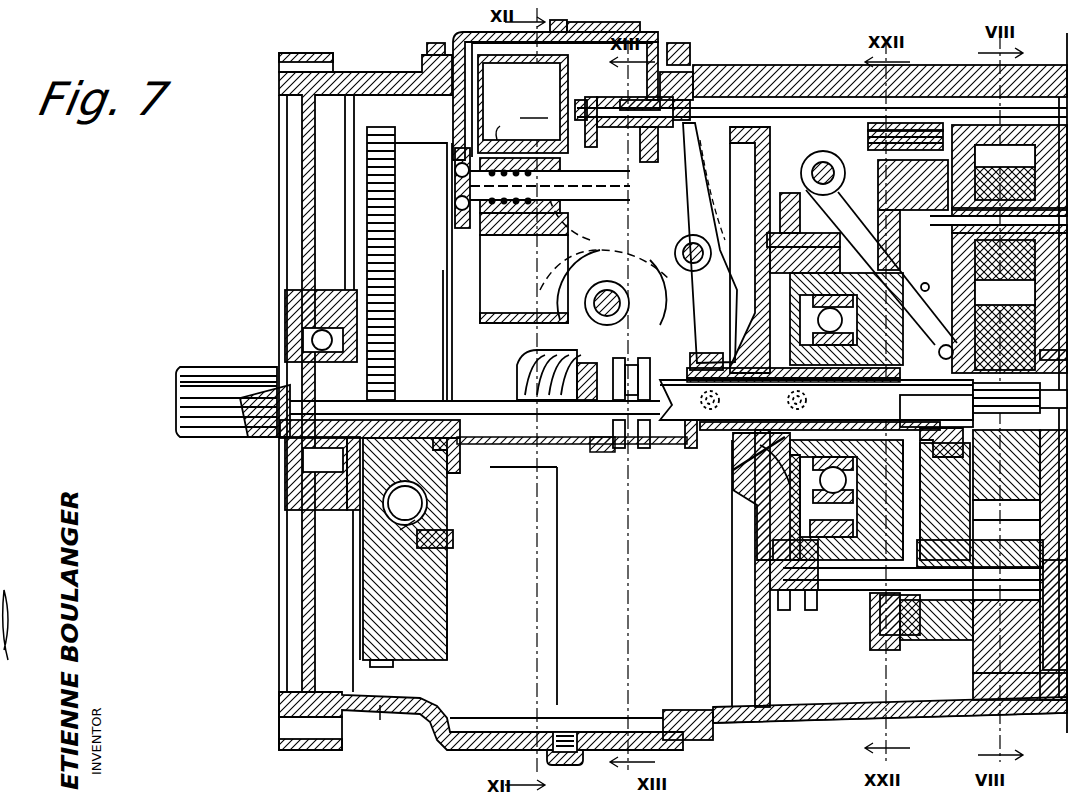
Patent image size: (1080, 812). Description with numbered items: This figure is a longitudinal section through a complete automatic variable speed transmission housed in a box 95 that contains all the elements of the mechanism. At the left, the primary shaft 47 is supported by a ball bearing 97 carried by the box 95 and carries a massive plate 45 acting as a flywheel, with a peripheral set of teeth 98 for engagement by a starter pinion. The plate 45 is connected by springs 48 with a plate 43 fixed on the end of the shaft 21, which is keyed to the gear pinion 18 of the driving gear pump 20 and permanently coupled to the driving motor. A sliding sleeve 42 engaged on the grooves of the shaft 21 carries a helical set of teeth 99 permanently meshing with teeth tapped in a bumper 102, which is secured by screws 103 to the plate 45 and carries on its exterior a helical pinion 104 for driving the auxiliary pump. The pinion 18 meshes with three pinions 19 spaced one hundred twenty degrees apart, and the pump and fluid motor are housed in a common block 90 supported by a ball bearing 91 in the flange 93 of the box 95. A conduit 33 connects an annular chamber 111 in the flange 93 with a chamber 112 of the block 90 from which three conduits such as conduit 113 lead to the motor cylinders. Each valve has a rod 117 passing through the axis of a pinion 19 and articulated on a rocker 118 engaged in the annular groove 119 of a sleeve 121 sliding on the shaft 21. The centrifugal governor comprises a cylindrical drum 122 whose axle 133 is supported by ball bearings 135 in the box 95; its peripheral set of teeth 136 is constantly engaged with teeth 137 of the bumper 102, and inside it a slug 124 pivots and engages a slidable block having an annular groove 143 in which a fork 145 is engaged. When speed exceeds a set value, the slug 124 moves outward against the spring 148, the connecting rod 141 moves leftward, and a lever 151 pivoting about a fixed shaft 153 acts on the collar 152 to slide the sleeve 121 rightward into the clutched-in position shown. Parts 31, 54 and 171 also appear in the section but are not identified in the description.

The gear pinion 18 is at (1028, 440).
The pinion 19 is at (1018, 172).
The gear pump 20 is at (1012, 302).
The shaft 21 is at (688, 435).
The shaft 31 is at (872, 595).
The conduit 33 is at (730, 485).
The sliding sleeve 42 is at (640, 457).
The plate 43 is at (438, 490).
The plate 45 is at (445, 642).
The primary shaft 47 is at (200, 423).
The springs 48 is at (390, 507).
The sleeve 54 is at (627, 447).
The block 90 is at (942, 145).
The ball bearing 91 is at (802, 515).
The flange 93 is at (755, 655).
The box 95 is at (833, 720).
The ball bearing 97 is at (292, 340).
The set of teeth 98 is at (360, 705).
The helical set of teeth 99 is at (605, 445).
The bumper 102 is at (425, 520).
The screws 103 is at (450, 547).
The helical pinion 104 is at (548, 352).
The annular chamber 111 is at (770, 490).
The chamber 112 is at (804, 387).
The conduit 113 is at (937, 438).
The rod 117 is at (880, 197).
The rocker 118 is at (888, 243).
The annular groove 119 is at (943, 430).
The sleeve 121 is at (878, 380).
The cylindrical drum 122 is at (543, 62).
The slug 124 is at (530, 107).
The axle 133 is at (458, 200).
The ball bearing 135 is at (436, 180).
The peripheral set of teeth 136 is at (523, 104).
The set of teeth 137 is at (505, 475).
The connecting rod 141 is at (650, 381).
The annular groove 143 is at (588, 222).
The fork 145 is at (593, 107).
The spring 148 is at (497, 140).
The lever 151 is at (720, 198).
The collar 152 is at (628, 289).
The fixed shaft 153 is at (693, 270).
The collar 171 is at (805, 610).